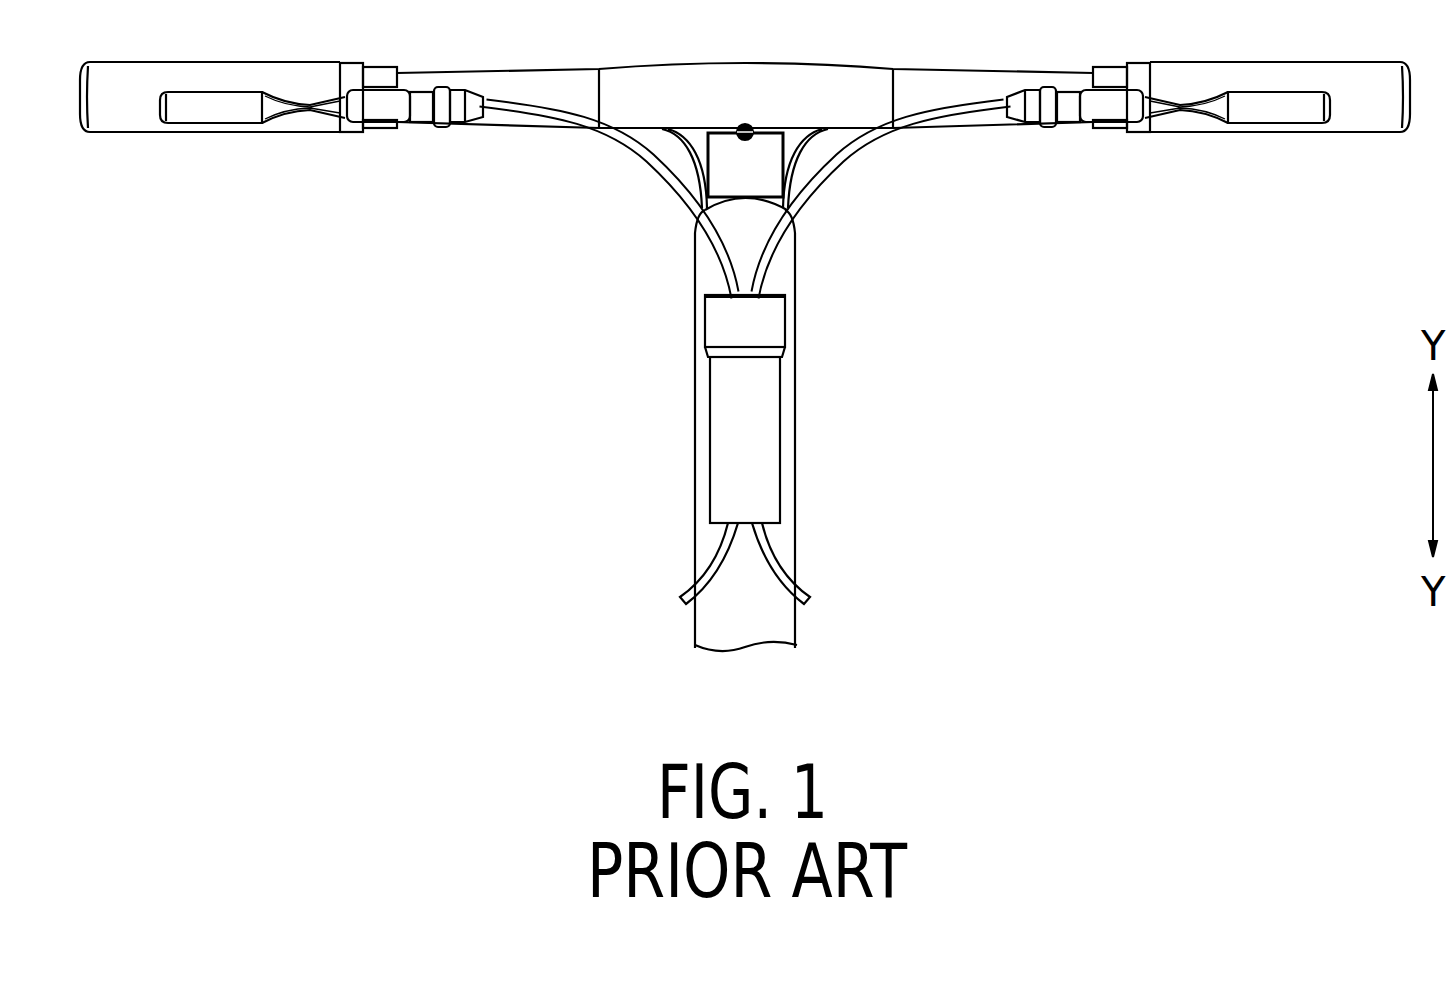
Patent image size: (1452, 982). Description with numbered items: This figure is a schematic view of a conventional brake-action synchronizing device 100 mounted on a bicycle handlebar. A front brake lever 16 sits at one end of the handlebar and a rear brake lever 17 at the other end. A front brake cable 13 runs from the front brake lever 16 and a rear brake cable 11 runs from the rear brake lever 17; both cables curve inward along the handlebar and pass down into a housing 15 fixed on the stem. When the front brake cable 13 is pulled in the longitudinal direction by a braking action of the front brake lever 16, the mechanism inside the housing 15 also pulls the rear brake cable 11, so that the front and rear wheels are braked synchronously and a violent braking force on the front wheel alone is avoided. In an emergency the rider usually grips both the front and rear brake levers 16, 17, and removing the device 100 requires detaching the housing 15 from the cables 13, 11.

The brake-action synchronizing device 100 is at (835, 389).
The rear brake cable 11 is at (847, 158).
The front brake cable 13 is at (648, 164).
The housing 15 is at (695, 320).
The front brake lever 16 is at (215, 110).
The rear brake lever 17 is at (1282, 110).